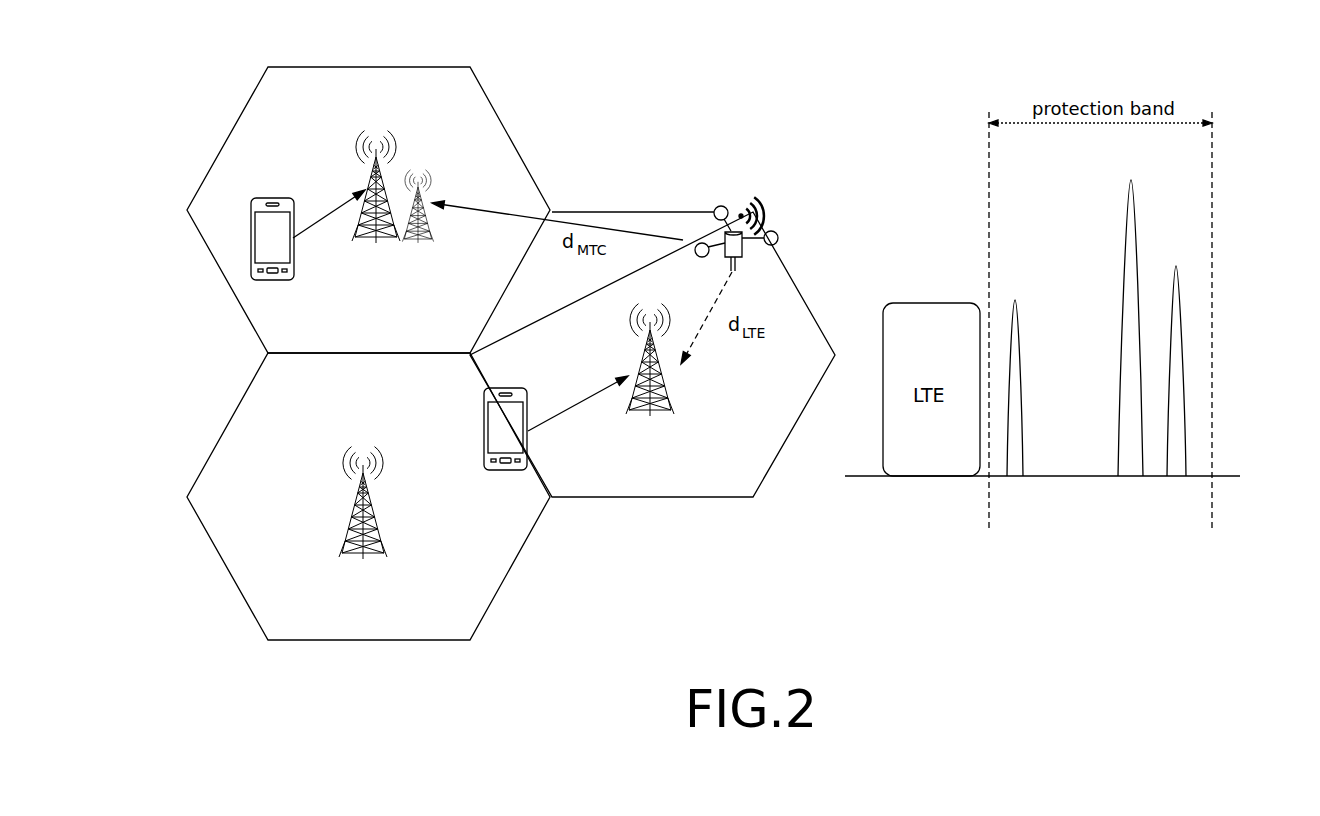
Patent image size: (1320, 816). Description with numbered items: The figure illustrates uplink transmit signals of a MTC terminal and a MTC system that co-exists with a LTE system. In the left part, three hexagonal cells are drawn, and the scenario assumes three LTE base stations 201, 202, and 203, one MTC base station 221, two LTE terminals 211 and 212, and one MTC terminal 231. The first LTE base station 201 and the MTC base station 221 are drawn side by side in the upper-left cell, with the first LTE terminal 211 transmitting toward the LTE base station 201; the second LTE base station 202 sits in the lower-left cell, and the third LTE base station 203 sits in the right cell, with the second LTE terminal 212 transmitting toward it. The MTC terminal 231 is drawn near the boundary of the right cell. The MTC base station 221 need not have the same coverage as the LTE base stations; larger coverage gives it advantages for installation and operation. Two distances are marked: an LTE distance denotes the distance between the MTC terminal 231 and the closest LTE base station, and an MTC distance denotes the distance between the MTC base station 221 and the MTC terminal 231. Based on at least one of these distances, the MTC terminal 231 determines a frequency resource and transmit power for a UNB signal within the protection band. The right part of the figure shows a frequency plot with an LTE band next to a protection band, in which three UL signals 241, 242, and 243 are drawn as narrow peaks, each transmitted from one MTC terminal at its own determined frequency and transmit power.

The LTE base station 201 is at (367, 186).
The LTE base station 202 is at (349, 526).
The LTE base station 203 is at (673, 391).
The LTE terminal 211 is at (270, 197).
The LTE terminal 212 is at (483, 430).
The MTC base station 221 is at (437, 229).
The MTC terminal 231 is at (779, 238).
The UL signal 241 is at (1015, 297).
The UL signal 242 is at (1131, 178).
The UL signal 243 is at (1176, 262).